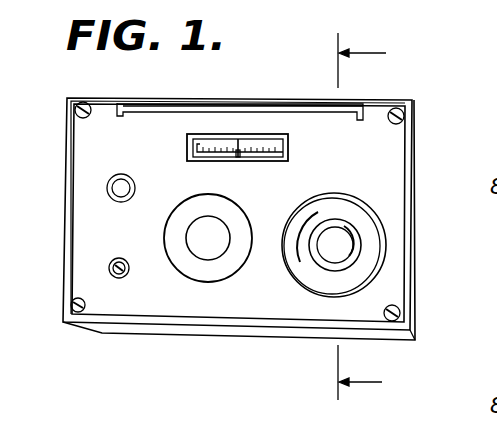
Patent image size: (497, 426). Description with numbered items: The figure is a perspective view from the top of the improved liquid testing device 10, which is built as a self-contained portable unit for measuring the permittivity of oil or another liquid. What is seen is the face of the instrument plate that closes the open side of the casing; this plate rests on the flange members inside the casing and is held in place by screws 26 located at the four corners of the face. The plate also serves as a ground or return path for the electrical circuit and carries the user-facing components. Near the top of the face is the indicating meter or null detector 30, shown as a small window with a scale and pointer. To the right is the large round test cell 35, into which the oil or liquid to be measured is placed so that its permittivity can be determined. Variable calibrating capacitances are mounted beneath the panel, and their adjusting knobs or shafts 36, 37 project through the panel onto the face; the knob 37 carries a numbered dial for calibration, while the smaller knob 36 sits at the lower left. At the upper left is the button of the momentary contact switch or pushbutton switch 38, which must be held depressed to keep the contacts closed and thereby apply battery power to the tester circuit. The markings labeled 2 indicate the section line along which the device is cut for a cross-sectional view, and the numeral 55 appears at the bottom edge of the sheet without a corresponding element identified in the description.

The liquid testing device 10 is at (217, 346).
The screws 26 is at (406, 118).
The indicating meter or null detector 30 is at (250, 142).
The test cell 35 is at (370, 242).
The adjusting knob or shaft 36 is at (114, 274).
The adjusting knob or shaft 37 is at (225, 269).
The momentary contact switch or pushbutton switch 38 is at (112, 187).
The section line 2- 2 is at (350, 216).
The reference 55 is at (379, 414).